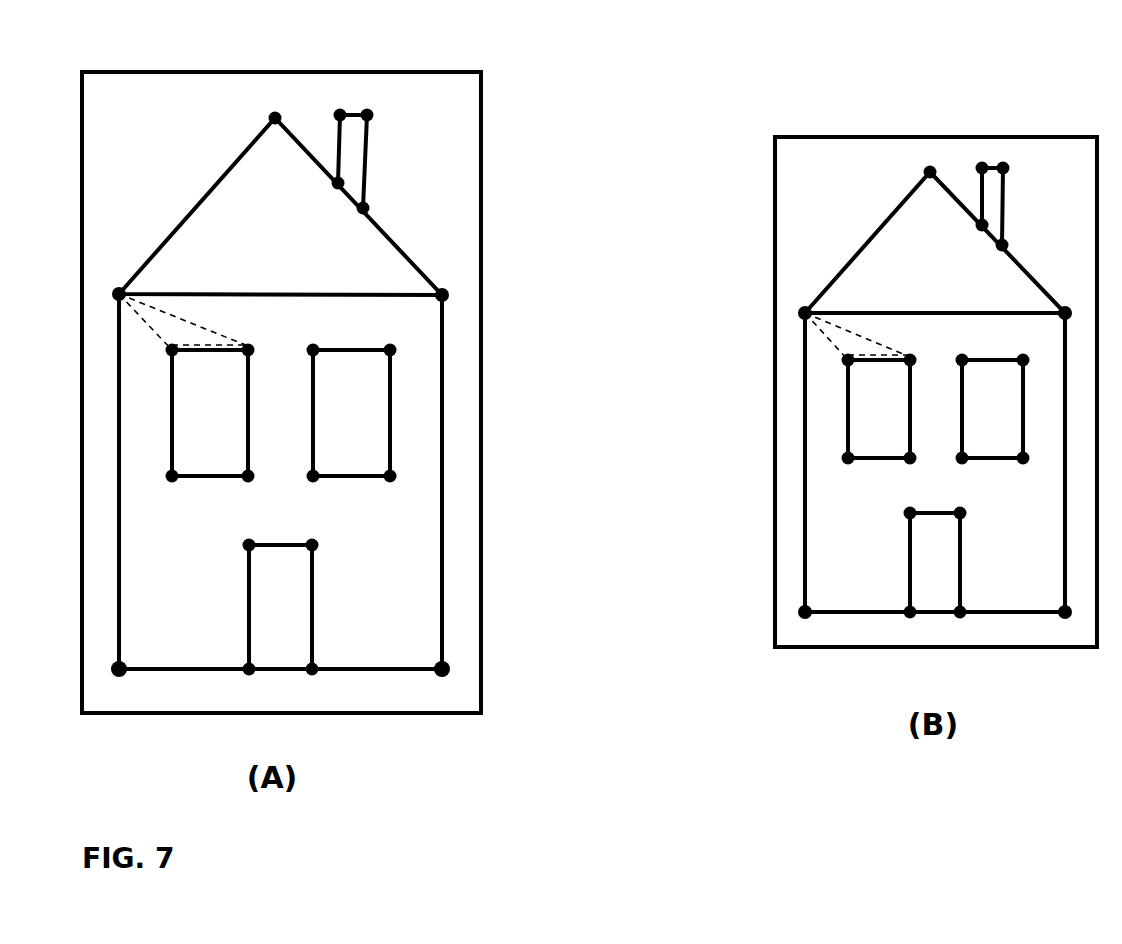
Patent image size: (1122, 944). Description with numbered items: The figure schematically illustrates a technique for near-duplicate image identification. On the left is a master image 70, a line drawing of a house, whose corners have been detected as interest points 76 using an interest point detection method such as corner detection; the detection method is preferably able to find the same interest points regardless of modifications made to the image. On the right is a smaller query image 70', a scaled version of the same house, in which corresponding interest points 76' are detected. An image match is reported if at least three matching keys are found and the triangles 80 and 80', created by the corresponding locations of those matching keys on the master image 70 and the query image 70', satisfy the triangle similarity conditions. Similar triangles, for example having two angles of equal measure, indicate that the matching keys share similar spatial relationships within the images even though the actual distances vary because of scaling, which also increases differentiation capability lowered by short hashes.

The image 70 is at (281, 363).
The interest points 76 is at (272, 408).
The triangle 80 is at (194, 322).
The query image 70' is at (936, 368).
The interest points 76' is at (929, 391).
The triangle 80' is at (871, 336).